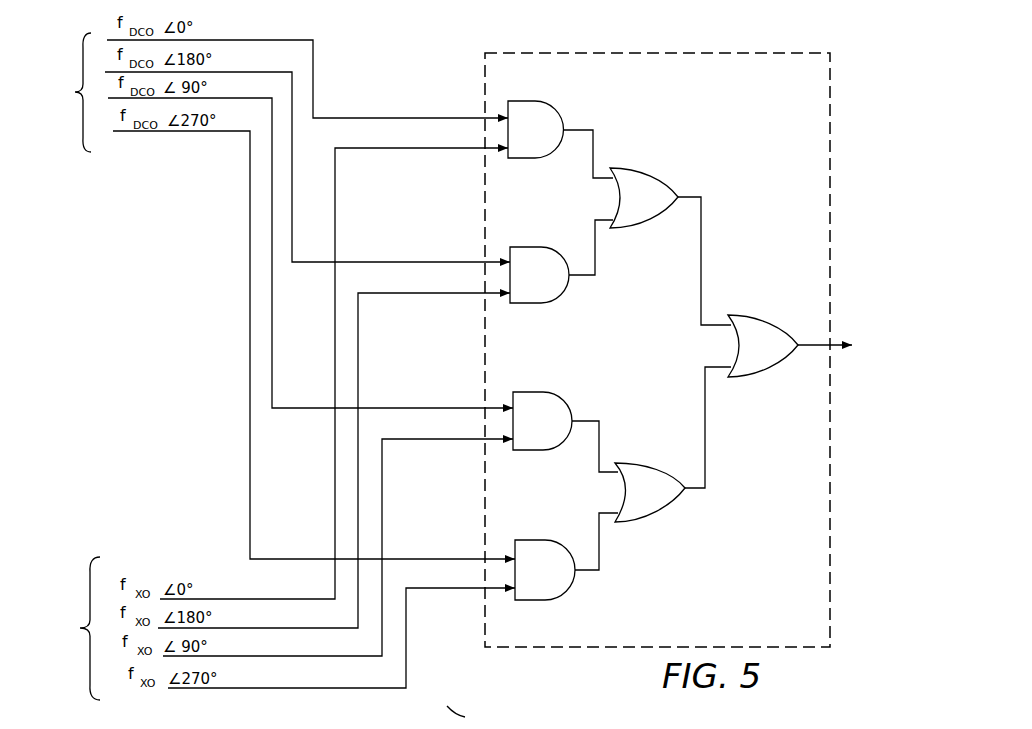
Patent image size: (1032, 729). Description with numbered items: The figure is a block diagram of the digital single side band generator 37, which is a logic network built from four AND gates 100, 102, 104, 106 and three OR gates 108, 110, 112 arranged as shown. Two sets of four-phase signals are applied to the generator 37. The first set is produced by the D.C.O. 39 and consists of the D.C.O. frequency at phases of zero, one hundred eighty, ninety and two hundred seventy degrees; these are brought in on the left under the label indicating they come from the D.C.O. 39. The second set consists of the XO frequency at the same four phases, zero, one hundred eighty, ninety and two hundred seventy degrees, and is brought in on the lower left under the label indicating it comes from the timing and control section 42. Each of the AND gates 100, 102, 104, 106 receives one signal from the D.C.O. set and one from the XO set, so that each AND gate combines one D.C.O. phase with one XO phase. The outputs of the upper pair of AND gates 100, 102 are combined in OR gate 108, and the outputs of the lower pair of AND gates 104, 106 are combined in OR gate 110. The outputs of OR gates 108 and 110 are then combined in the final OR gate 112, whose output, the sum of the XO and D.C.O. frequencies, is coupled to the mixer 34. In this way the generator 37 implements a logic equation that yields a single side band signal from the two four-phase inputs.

The digital single side band generator 37 is at (526, 49).
The AND gate 100 is at (537, 101).
The AND gate 102 is at (538, 247).
The AND gate 104 is at (538, 392).
The AND gate 106 is at (540, 540).
The OR gate 108 is at (630, 167).
The OR gate 110 is at (633, 463).
The OR gate 112 is at (747, 318).
The D.C.O. 39 is at (71, 79).
The timing and control 42 is at (73, 612).
The mixer 34 is at (881, 365).